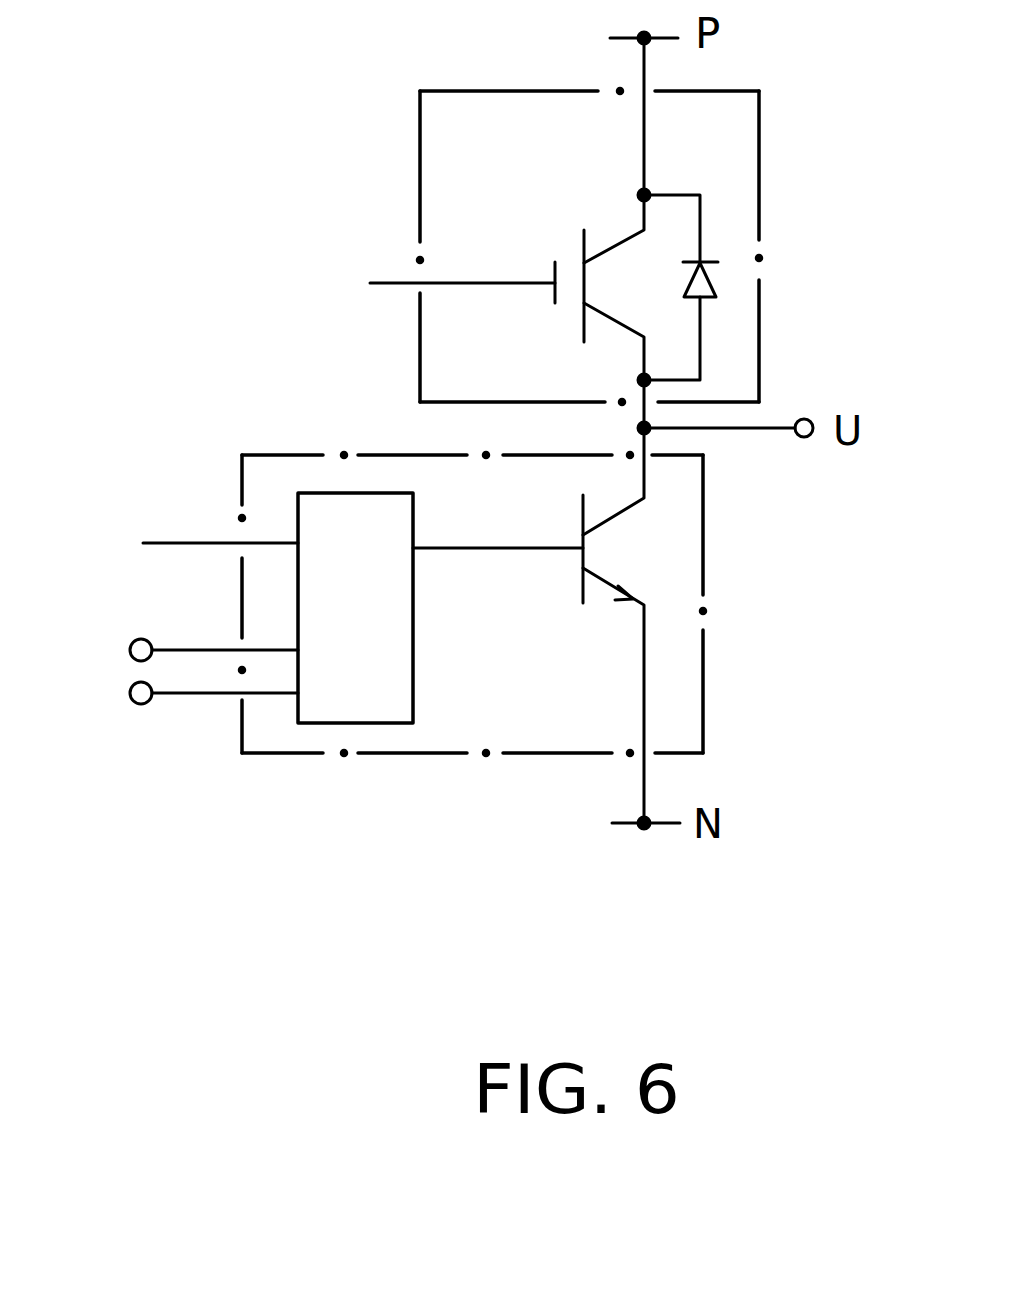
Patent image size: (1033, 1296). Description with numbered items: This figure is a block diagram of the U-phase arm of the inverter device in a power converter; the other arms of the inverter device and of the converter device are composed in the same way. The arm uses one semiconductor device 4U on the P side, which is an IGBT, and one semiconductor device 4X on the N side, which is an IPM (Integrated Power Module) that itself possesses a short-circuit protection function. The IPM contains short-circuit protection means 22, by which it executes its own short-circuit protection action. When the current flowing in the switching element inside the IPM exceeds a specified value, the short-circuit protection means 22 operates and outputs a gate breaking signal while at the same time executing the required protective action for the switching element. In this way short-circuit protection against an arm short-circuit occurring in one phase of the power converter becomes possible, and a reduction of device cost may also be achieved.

The semiconductor device 4U is at (759, 142).
The semiconductor device 4X is at (436, 625).
The short-circuit protection means 22 is at (413, 597).